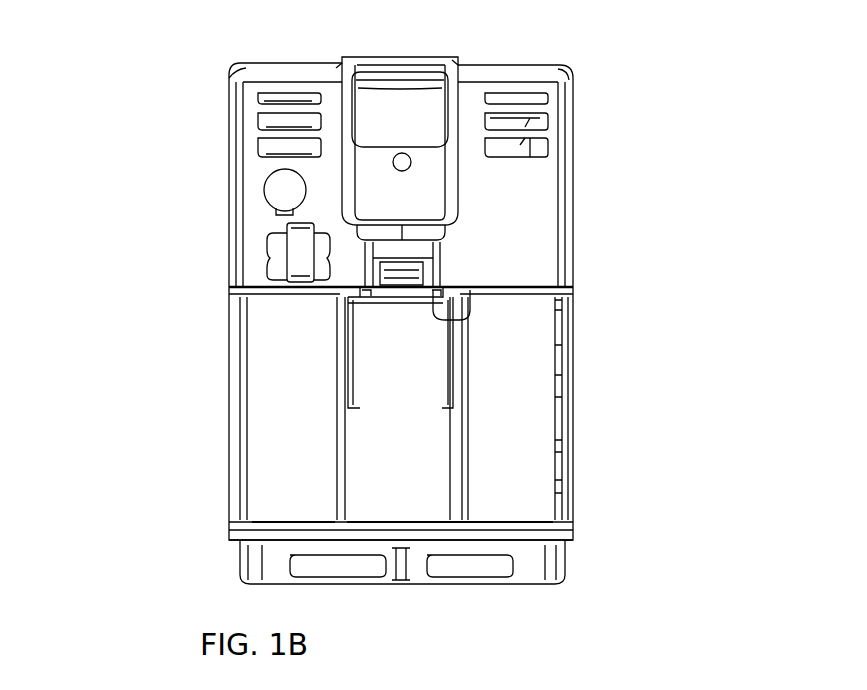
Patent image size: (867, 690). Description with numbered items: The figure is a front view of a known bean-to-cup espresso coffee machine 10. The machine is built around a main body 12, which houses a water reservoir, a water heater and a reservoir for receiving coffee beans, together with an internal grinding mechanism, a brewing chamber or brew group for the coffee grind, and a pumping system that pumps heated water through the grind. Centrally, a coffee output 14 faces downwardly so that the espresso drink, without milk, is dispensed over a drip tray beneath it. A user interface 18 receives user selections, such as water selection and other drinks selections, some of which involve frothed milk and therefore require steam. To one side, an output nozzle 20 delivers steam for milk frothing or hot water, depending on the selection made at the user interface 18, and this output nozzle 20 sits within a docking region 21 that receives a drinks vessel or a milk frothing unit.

The espresso coffee machine 10 is at (598, 298).
The main body 12 is at (227, 246).
The coffee output 14 is at (473, 288).
The user interface 18 is at (588, 141).
The output nozzle 20 is at (290, 283).
The docking region 21 is at (303, 404).